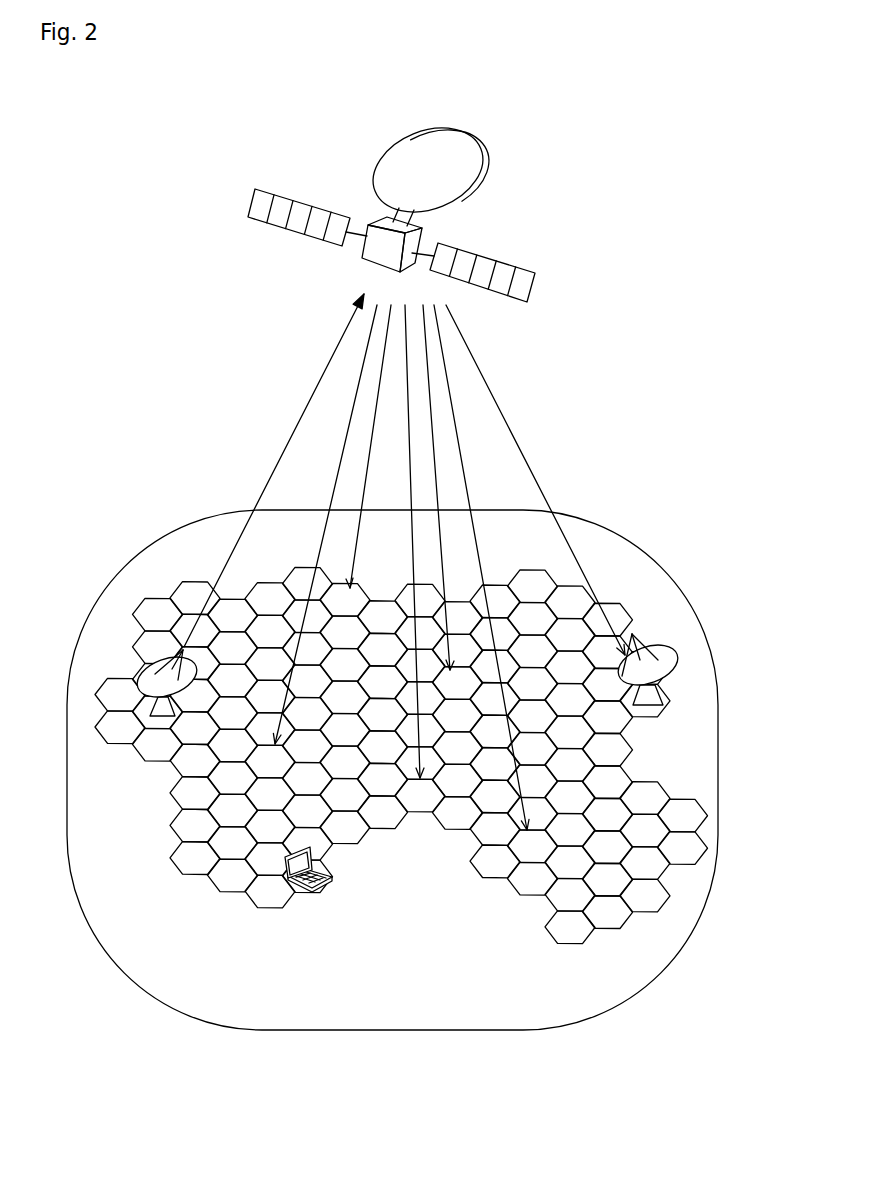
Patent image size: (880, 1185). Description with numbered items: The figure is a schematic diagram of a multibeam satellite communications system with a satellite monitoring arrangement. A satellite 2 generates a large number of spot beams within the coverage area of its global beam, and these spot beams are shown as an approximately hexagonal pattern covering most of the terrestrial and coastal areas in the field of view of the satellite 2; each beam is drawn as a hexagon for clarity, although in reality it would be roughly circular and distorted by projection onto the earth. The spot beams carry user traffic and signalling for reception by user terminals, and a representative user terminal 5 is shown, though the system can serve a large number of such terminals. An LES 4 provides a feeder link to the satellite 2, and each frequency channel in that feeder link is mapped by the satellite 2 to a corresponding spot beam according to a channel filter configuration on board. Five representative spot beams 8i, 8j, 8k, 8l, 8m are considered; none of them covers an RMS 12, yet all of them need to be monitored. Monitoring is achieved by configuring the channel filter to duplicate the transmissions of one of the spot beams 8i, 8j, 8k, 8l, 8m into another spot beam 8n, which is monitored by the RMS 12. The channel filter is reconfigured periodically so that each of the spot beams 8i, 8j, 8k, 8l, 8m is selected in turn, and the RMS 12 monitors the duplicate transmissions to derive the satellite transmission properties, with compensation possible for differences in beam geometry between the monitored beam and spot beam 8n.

The satellite 2 is at (452, 198).
The LES 4 is at (137, 682).
The user terminal 5 is at (317, 890).
The RMS 12 is at (677, 643).
The spot beam 8i is at (270, 761).
The spot beam 8j is at (345, 599).
The spot beam 8k is at (420, 795).
The spot beam 8l is at (458, 682).
The spot beam 8m is at (533, 846).
The spot beam 8n is at (640, 705).